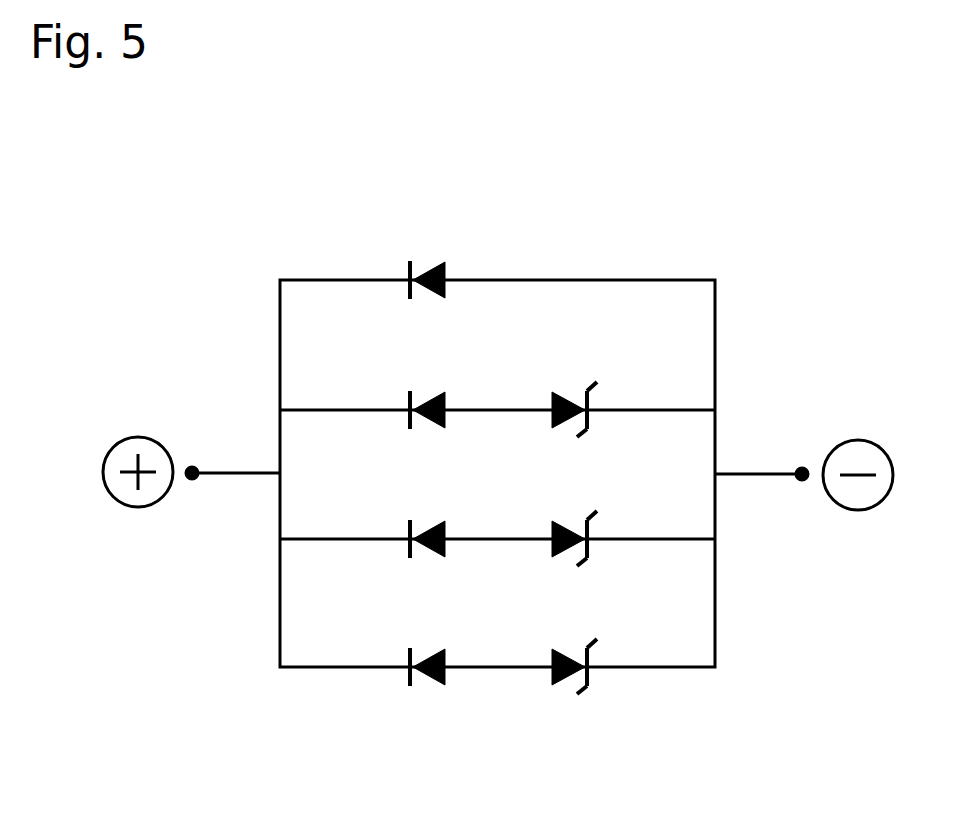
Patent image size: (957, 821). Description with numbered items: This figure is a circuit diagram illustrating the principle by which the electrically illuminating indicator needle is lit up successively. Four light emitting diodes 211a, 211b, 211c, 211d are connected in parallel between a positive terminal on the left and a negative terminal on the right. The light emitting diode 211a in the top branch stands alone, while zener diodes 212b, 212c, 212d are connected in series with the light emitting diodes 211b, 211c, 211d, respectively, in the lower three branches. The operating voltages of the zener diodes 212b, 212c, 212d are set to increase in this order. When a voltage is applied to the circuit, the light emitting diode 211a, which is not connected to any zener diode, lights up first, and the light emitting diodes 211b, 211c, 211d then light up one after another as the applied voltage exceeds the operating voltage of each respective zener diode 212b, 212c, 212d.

The light emitting diode 211a is at (436, 264).
The light emitting diode 211b is at (433, 393).
The light emitting diode 211c is at (427, 556).
The light emitting diode 211d is at (432, 685).
The zener diode 212b is at (562, 394).
The zener diode 212c is at (557, 558).
The zener diode 212d is at (557, 685).